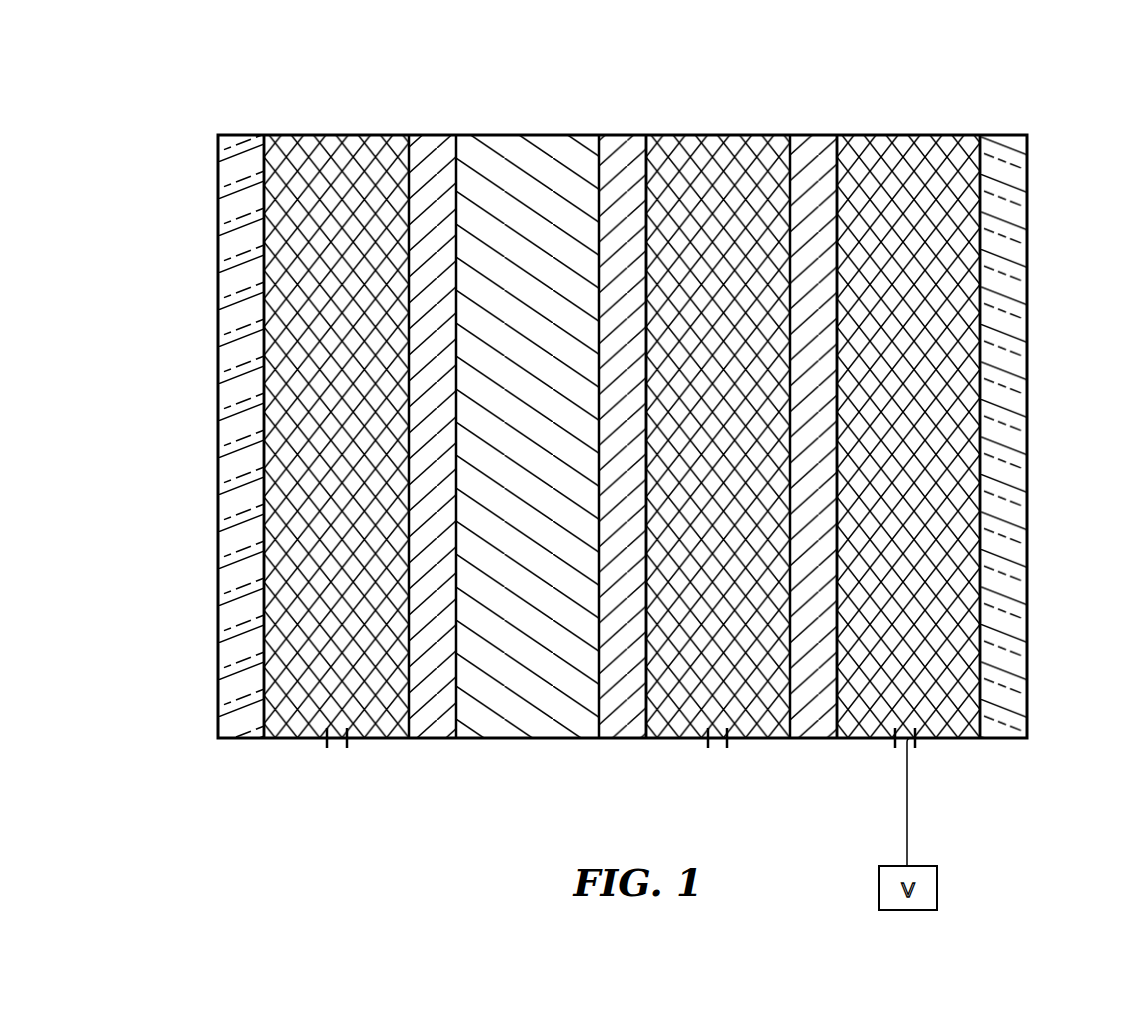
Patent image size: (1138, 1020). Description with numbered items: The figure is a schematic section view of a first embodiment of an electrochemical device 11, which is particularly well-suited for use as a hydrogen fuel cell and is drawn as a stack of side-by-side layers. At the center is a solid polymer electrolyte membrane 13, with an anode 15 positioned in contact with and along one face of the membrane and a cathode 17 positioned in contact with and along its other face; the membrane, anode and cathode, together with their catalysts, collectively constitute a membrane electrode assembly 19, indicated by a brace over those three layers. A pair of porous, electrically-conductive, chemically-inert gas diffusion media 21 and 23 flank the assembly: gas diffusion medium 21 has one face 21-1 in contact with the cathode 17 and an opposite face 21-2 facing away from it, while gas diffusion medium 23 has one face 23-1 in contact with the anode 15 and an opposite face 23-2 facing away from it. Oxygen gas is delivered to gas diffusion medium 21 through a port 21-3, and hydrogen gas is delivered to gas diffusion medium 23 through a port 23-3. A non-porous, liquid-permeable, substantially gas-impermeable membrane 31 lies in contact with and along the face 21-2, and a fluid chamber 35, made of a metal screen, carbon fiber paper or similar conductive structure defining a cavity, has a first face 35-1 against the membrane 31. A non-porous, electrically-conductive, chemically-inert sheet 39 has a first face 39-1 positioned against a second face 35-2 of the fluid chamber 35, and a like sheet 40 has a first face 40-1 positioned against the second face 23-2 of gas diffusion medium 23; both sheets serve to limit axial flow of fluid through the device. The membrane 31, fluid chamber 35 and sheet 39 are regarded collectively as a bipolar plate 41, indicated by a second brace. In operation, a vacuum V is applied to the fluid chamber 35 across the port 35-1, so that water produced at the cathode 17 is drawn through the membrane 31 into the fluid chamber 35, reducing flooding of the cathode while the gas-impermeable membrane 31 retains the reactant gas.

The electrochemical device 11 is at (214, 109).
The solid polymer electrolyte membrane 13 is at (548, 728).
The anode 15 is at (432, 728).
The cathode 17 is at (618, 727).
The membrane electrode assembly 19 is at (527, 435).
The gas diffusion medium 21 is at (685, 728).
The face of gas diffusion medium 21-1 is at (667, 738).
The opposite face of gas diffusion medium 21-2 is at (778, 737).
The port 21-3 is at (717, 740).
The gas diffusion medium 23 is at (300, 683).
The face of gas diffusion medium 23-1 is at (405, 708).
The opposite face of gas diffusion medium 23-2 is at (276, 738).
The port 23-3 is at (337, 740).
The membrane 31 is at (803, 720).
The fluid chamber 35 is at (950, 625).
The first face of fluid chamber / port 35-1 is at (838, 697).
The second face of fluid chamber 35-2 is at (980, 562).
The sheet 39 is at (1013, 740).
The first face of sheet 39-1 is at (987, 720).
The sheet 40 is at (237, 738).
The first face of sheet 40-1 is at (262, 673).
The bipolar plate 41 is at (951, 452).